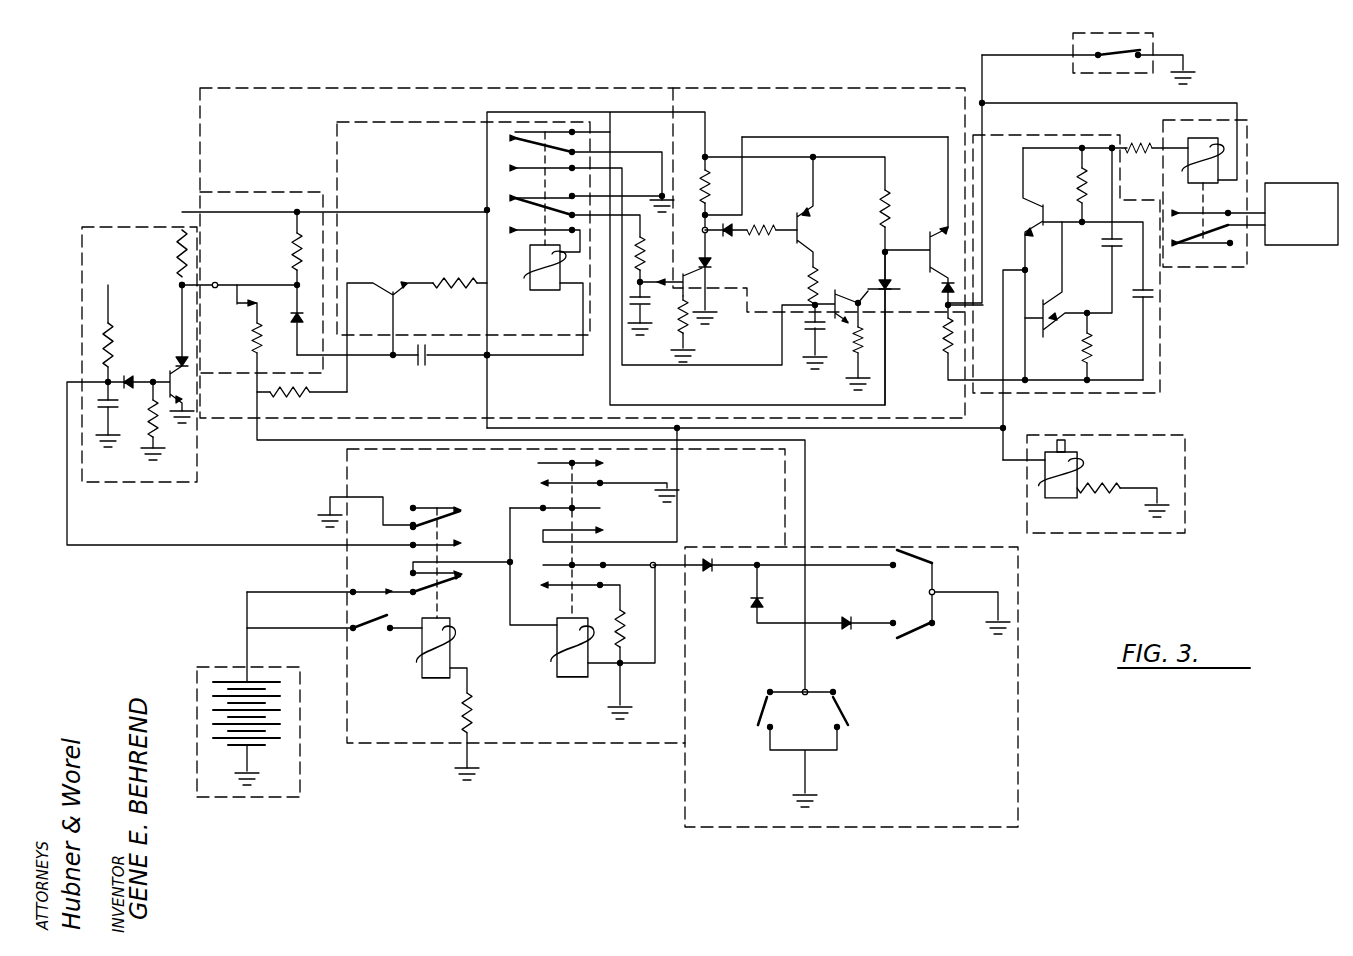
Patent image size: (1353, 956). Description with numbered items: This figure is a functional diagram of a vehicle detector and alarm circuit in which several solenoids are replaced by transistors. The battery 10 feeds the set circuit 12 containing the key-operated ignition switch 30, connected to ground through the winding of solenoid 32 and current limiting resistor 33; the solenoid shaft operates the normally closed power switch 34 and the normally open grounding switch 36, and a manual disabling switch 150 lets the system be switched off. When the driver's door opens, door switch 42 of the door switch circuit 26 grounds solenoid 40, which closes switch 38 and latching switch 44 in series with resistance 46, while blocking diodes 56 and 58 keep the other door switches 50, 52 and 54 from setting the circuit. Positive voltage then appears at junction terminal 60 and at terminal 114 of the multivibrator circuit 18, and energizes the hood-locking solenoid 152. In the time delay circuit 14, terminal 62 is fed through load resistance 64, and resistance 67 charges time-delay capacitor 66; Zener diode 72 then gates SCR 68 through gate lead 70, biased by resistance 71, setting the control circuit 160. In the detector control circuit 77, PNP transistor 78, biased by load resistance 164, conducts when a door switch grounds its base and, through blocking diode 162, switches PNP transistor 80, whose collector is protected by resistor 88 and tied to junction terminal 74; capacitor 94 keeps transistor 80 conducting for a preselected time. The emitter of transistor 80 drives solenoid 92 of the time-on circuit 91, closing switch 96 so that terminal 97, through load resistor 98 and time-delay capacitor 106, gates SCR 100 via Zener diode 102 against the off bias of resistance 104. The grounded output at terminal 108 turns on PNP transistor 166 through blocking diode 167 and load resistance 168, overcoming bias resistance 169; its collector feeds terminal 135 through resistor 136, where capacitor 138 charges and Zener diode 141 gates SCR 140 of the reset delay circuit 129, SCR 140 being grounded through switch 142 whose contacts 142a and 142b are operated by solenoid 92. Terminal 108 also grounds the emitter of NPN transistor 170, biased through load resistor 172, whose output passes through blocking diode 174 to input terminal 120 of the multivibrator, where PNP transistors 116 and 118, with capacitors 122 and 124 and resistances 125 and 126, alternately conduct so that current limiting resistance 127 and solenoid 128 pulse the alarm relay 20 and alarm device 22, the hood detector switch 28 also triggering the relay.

The battery 10 is at (300, 786).
The set circuit 12 is at (583, 735).
The time delay circuit 14 is at (126, 237).
The multivibrator circuit 18 is at (1066, 110).
The alarm relay 20 is at (1248, 128).
The alarm device 22 is at (1335, 250).
The door switch circuit 26 is at (1020, 728).
The hood detector switch 28 is at (1155, 40).
The ignition switch 30 is at (383, 631).
The solenoid 32 is at (436, 676).
The current limiting resistor 33 is at (472, 712).
The power switch 34 is at (462, 581).
The grounding switch 36 is at (462, 531).
The switch 38 is at (604, 529).
The solenoid 40 is at (573, 678).
The door switch 42 is at (911, 552).
The latching switch 44 is at (541, 587).
The resistance 46 is at (628, 652).
The door switch 50 is at (920, 635).
The door switch 52 is at (844, 712).
The door switch 54 is at (757, 713).
The blocking diode 56 is at (707, 574).
The blocking diode 58 is at (752, 605).
The positive voltage junction terminal 60 is at (675, 433).
The junction terminal 62 is at (180, 284).
The load resistance 64 is at (182, 258).
The time-delay capacitor 66 is at (115, 412).
The resistance 67 is at (110, 342).
The SCR 68 is at (182, 355).
The gate lead 70 is at (173, 385).
The resistance 71 is at (158, 428).
The Zener diode 72 is at (127, 378).
The junction terminal 74 is at (216, 283).
The detector control circuit 77 is at (260, 191).
The PNP transistor 78 is at (254, 303).
The PNP transistor 80 is at (393, 290).
The current limiting resistor 88 is at (315, 396).
The time-on circuit 91 is at (335, 130).
The solenoid 92 is at (548, 292).
The capacitor 94 is at (426, 360).
The switch 96 is at (512, 222).
The junction terminal 97 is at (638, 283).
The load resistor 98 is at (642, 257).
The SCR 100 is at (710, 272).
The Zener diode 102 is at (673, 300).
The resistance 104 is at (688, 330).
The time-delay capacitor 106 is at (637, 305).
The junction terminal 108 is at (703, 228).
The junction terminal 114 is at (1006, 426).
The PNP transistor 116 is at (1048, 315).
The PNP transistor 118 is at (1040, 217).
The input terminal 120 is at (982, 100).
The capacitor 122 is at (1108, 244).
The capacitor 124 is at (1158, 297).
The resistance 125 is at (1079, 182).
The resistance 126 is at (1094, 346).
The current limiting resistance 127 is at (1135, 144).
The solenoid 128 is at (1250, 172).
The reset delay circuit 129 is at (863, 86).
The junction terminal 135 is at (812, 304).
The current limiting resistor 136 is at (817, 264).
The capacitor 138 is at (832, 312).
The SCR 140 is at (882, 284).
The Zener diode 141 is at (818, 332).
The switch 142 is at (549, 126).
The contact 142a is at (512, 136).
The contact 142b is at (512, 168).
The disabling switch 150 is at (368, 588).
The solenoid 152 is at (1187, 450).
The control circuit 160 is at (213, 109).
The blocking diode 162 is at (301, 316).
The load resistance 164 is at (295, 265).
The PNP transistor 166 is at (805, 234).
The blocking diode 167 is at (731, 226).
The load resistance 168 is at (760, 236).
The load resistance 169 is at (708, 178).
The NPN transistor 170 is at (938, 234).
The load resistor 172 is at (888, 205).
The blocking diode 174 is at (946, 290).